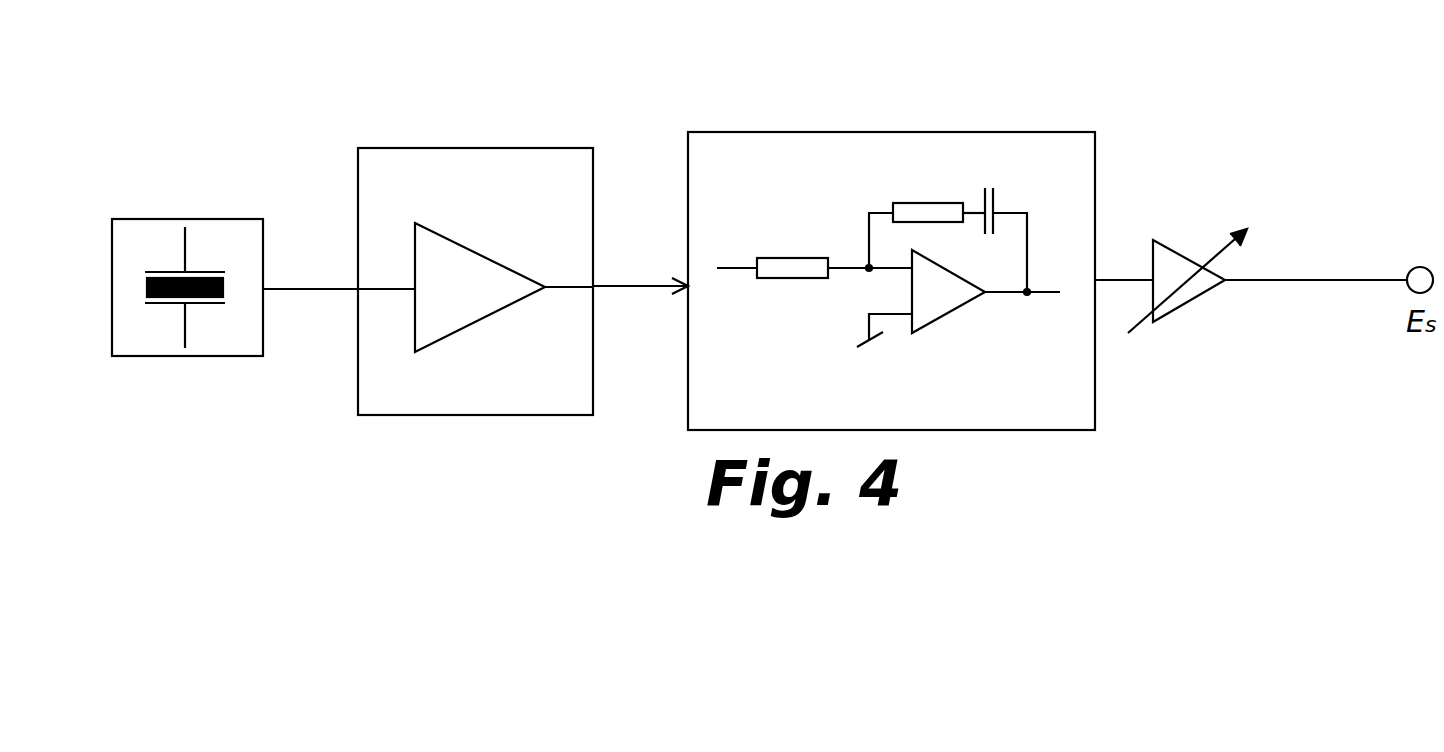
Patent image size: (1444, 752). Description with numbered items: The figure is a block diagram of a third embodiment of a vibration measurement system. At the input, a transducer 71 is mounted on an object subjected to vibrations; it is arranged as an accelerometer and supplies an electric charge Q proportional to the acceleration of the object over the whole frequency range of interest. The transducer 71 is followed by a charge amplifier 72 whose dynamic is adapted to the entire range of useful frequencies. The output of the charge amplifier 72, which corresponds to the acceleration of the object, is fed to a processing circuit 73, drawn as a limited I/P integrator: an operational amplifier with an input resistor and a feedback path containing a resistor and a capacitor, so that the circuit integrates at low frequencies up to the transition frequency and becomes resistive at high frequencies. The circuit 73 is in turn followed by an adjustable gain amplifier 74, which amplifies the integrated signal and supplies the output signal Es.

The transducer 71 is at (168, 219).
The charge amplifier 72 is at (438, 148).
The circuit 73 is at (853, 132).
The adjustable gain amplifier 74 is at (1173, 250).